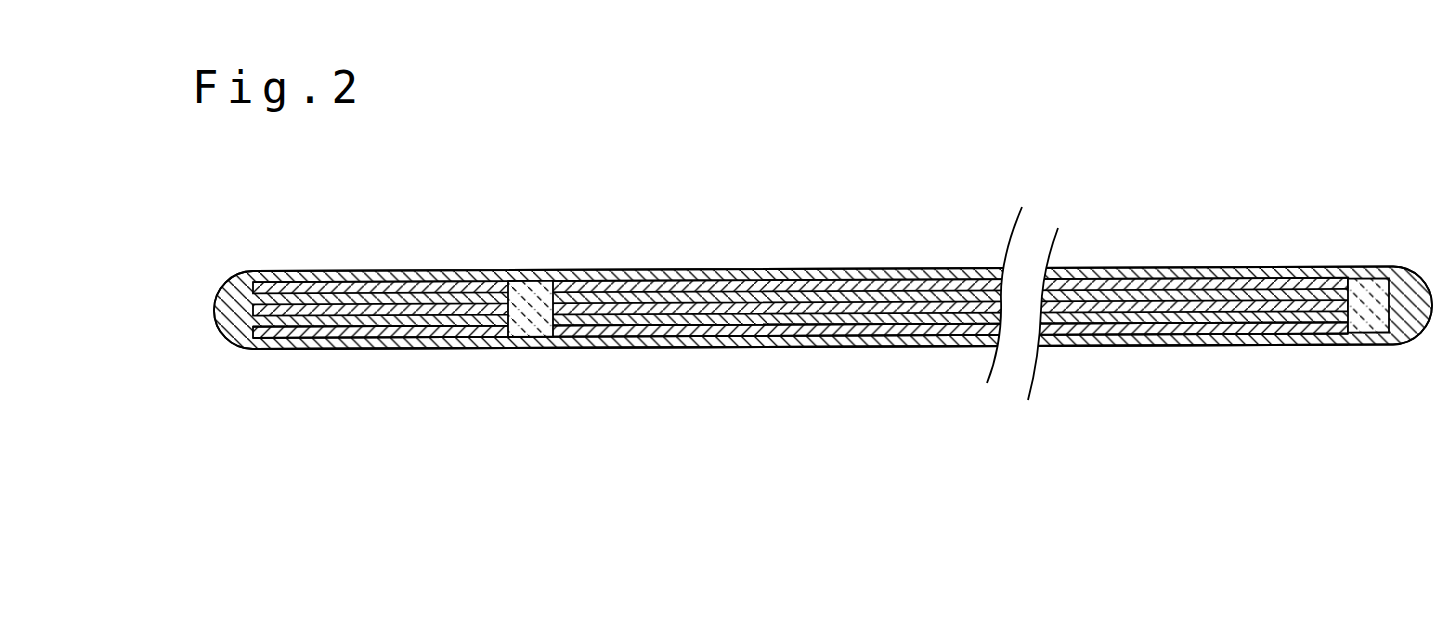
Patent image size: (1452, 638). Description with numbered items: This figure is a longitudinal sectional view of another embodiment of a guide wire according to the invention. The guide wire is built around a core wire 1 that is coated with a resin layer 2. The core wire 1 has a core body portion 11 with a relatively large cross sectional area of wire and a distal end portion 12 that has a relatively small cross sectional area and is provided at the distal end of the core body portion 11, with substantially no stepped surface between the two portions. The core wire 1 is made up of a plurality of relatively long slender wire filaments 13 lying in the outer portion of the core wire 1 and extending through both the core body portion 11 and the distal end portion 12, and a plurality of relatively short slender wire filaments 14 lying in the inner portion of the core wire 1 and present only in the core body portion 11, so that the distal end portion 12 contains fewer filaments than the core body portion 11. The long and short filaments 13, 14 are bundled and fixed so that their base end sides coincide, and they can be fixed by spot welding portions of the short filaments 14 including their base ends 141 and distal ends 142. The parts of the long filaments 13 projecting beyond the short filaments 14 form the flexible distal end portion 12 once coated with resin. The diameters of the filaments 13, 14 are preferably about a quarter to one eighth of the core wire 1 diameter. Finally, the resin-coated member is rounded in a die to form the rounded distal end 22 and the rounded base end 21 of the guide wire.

The core wire 1 is at (587, 493).
The core body portion 11 is at (800, 409).
The distal end portion 12 is at (457, 339).
The relatively long slender wire filaments 13 is at (823, 207).
The relatively short slender wire filaments 14 is at (800, 242).
The base ends 141 is at (1364, 228).
The distal ends 142 is at (500, 241).
The resin layer 2 is at (823, 379).
The rounded base end 21 is at (1383, 380).
The rounded distal end 22 is at (195, 364).